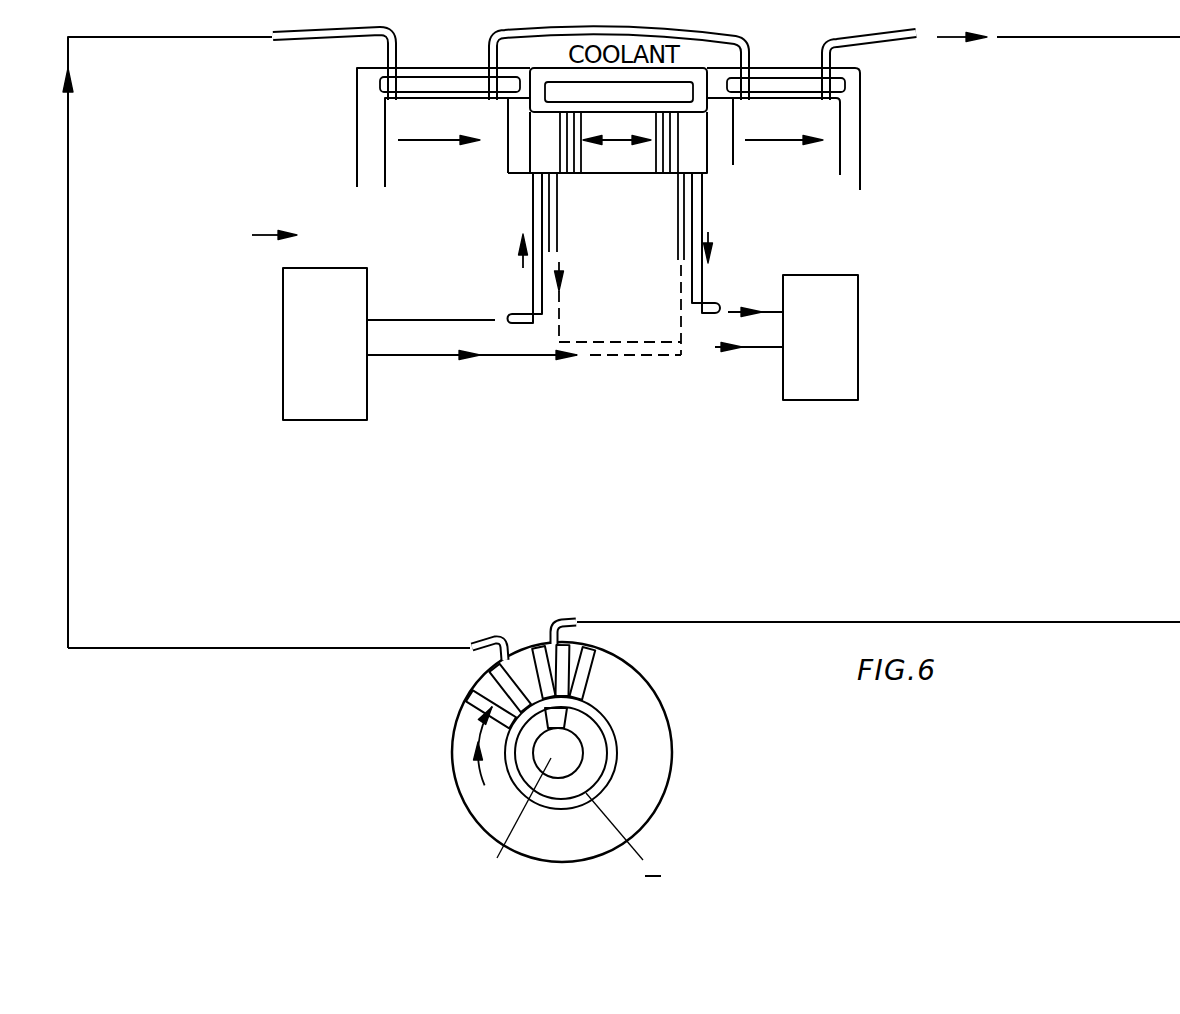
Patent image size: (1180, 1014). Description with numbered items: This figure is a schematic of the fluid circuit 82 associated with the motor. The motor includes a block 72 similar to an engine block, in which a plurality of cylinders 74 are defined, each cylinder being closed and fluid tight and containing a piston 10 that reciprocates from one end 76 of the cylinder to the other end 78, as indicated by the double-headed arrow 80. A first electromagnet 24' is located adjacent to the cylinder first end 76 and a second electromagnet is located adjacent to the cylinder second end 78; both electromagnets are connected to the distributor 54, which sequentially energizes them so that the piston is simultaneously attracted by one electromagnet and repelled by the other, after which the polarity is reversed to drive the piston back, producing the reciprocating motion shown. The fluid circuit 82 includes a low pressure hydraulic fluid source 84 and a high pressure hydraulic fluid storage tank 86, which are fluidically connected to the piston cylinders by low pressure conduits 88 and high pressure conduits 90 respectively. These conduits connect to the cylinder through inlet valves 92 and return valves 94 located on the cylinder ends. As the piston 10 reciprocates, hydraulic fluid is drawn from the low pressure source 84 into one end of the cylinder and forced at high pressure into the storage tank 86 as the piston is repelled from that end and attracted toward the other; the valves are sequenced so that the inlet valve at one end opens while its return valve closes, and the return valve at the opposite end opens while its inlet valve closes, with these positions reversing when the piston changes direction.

The piston 10 is at (607, 187).
The first electromagnet 24' is at (469, 162).
The distributor 54 is at (456, 838).
The block 72 is at (372, 178).
The cylinder 74 is at (622, 160).
The cylinder first end 76 is at (528, 143).
The cylinder second end 78 is at (707, 153).
The double-headed arrow 80 is at (617, 128).
The fluid circuit 82 is at (258, 238).
The low pressure hydraulic fluid source 84 is at (307, 408).
The high pressure hydraulic fluid storage tank 86 is at (811, 388).
The low pressure conduits 88 is at (413, 320).
The high pressure conduits 90 is at (728, 312).
The inlet valves 92 is at (527, 185).
The return valves 94 is at (558, 177).